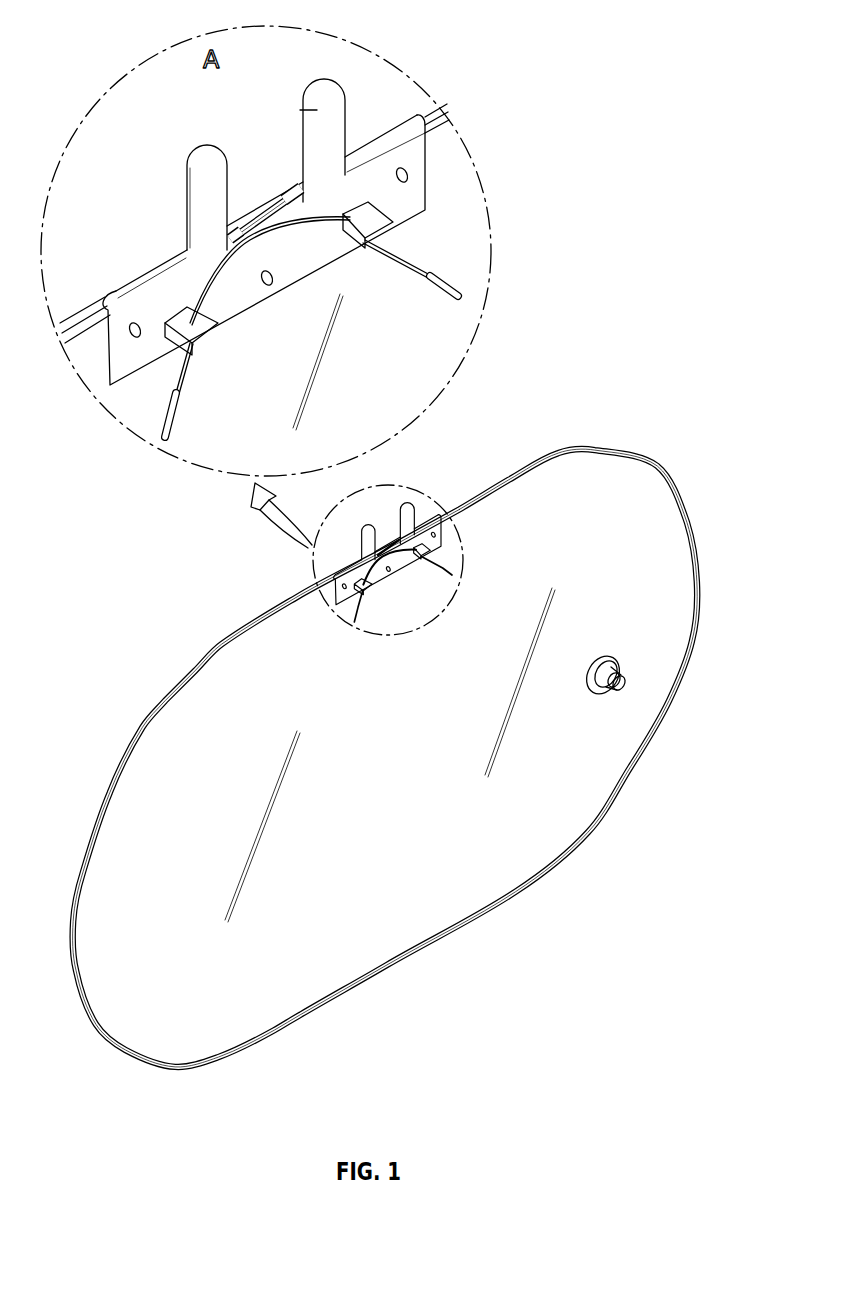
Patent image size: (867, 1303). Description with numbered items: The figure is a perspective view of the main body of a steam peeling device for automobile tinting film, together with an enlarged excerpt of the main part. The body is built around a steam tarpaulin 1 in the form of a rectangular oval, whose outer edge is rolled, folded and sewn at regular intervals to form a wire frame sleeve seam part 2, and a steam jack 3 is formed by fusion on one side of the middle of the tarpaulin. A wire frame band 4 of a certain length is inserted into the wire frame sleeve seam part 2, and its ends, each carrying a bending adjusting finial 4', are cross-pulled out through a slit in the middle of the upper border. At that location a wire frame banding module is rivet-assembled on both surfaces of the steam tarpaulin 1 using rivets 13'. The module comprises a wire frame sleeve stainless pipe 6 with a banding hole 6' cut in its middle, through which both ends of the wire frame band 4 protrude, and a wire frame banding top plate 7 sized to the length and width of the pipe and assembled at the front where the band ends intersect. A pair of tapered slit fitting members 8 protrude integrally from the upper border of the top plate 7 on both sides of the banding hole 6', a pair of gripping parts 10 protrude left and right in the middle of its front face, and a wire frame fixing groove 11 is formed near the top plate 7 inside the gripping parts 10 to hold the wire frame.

The steam tarpaulin 1 is at (405, 353).
The wire frame sleeve seam part 2 is at (440, 118).
The steam jack 3 is at (615, 694).
The wire frame band 4 is at (123, 419).
The bending adjusting finial 4' is at (511, 302).
The wire frame sleeve stainless pipe 6 is at (265, 194).
The banding hole 6' is at (267, 297).
The wire frame banding top plate 7 is at (160, 300).
The tapered slit fitting member 8 is at (317, 110).
The gripping part 10 is at (377, 218).
The wire frame fixing groove 11 is at (367, 218).
The rivet 13' is at (358, 240).